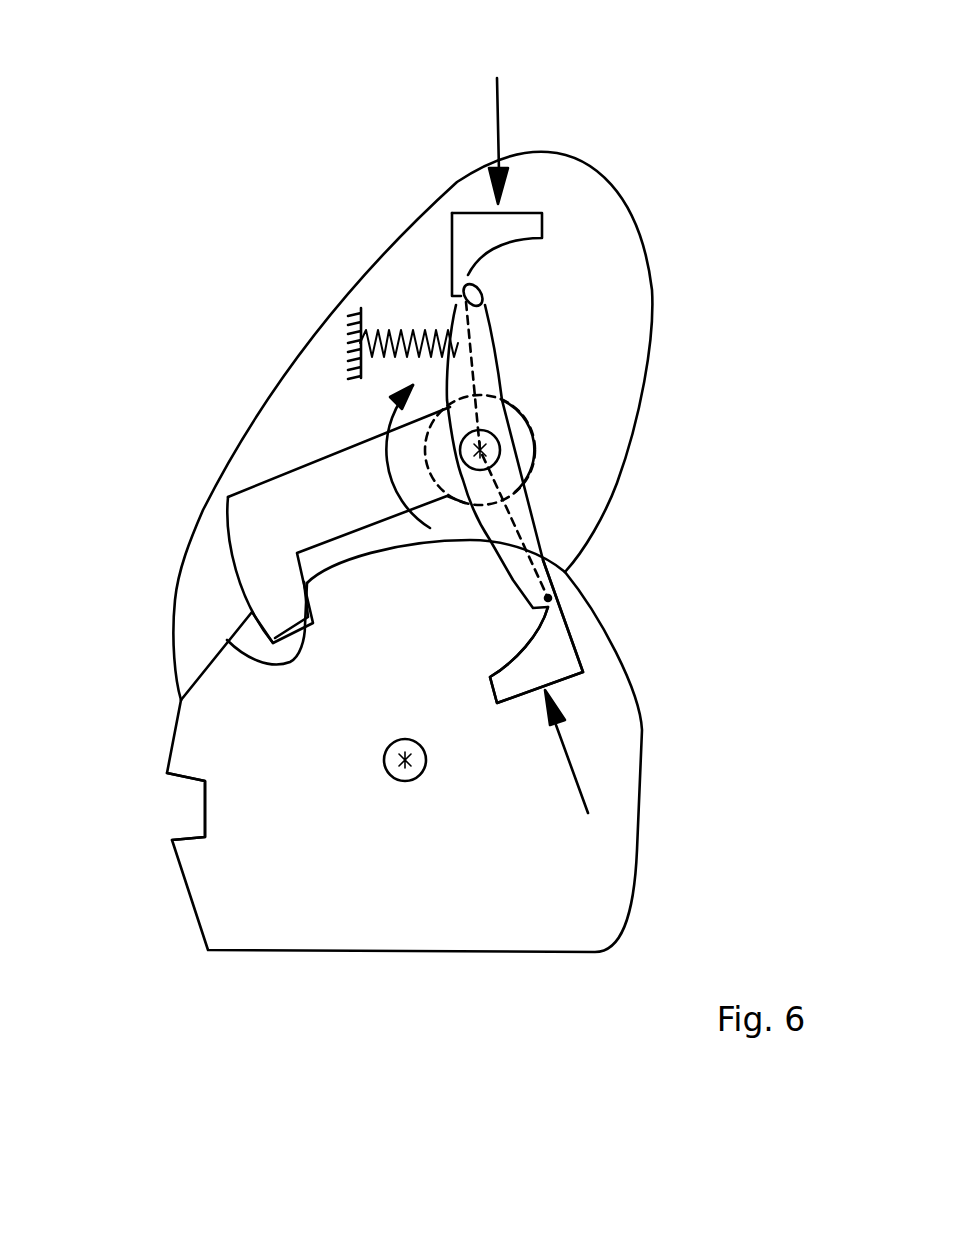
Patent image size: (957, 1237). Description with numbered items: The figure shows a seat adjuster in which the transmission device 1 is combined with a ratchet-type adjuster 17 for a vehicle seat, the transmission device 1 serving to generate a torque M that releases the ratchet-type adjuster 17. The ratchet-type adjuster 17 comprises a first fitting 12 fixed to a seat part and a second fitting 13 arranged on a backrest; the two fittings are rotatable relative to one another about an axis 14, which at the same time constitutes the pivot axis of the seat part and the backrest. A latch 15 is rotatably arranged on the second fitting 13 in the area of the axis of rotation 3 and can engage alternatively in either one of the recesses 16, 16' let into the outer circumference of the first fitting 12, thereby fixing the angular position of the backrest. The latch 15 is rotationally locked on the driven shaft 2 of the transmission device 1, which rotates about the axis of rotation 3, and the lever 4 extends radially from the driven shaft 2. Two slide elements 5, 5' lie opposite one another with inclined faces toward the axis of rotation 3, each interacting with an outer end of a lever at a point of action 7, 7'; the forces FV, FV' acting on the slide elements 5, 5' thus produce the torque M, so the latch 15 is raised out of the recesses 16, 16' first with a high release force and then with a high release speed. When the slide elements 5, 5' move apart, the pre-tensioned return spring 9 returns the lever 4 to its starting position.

The transmission device 1 is at (485, 348).
The lever 4 is at (486, 450).
The driven shaft 2 is at (497, 458).
The axis of rotation 3 is at (490, 451).
The slide element 5 is at (453, 216).
The slide element 5' is at (603, 636).
The point of action 7 is at (600, 282).
The point of action 7' is at (636, 608).
The return spring 9 is at (407, 330).
The first fitting 12 is at (471, 878).
The second fitting 13 is at (593, 205).
The axis 14 is at (384, 753).
The latch 15 is at (260, 517).
The recess 16 is at (200, 598).
The recess 16' is at (129, 797).
The ratchet-type adjuster 17 is at (703, 504).
The torque M is at (390, 435).
The locking force FV is at (509, 117).
The locking force FV' is at (580, 777).